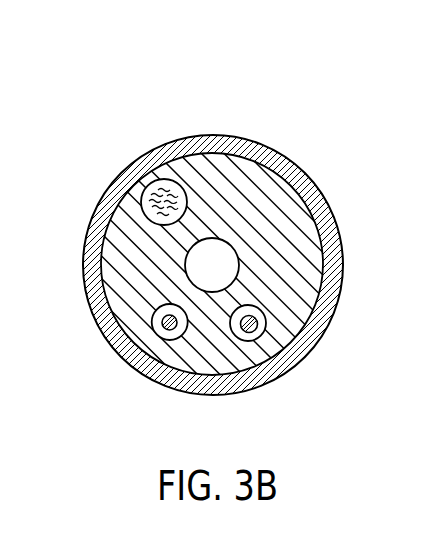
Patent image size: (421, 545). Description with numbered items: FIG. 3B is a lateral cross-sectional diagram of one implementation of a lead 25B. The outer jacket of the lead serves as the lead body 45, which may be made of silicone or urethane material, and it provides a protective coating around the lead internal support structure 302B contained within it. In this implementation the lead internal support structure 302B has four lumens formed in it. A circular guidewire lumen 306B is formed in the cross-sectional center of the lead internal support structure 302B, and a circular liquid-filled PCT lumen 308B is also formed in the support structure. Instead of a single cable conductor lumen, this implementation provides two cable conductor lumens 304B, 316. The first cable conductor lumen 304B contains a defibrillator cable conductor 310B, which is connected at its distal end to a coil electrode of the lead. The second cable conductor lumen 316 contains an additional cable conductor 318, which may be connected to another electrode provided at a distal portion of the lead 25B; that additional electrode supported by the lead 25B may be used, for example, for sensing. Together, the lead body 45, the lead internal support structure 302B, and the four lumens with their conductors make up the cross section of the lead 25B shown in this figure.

The lead 25B is at (210, 225).
The lead body 45 is at (257, 152).
The lead internal support structure 302B is at (310, 240).
The liquid-filled PCT lumen 308B is at (147, 189).
The guidewire lumen 306B is at (120, 358).
The first cable conductor lumen 304B is at (286, 360).
The second cable conductor lumen 316 is at (197, 267).
The additional cable conductor 318 is at (167, 331).
The defibrillator cable conductor 310B is at (253, 334).